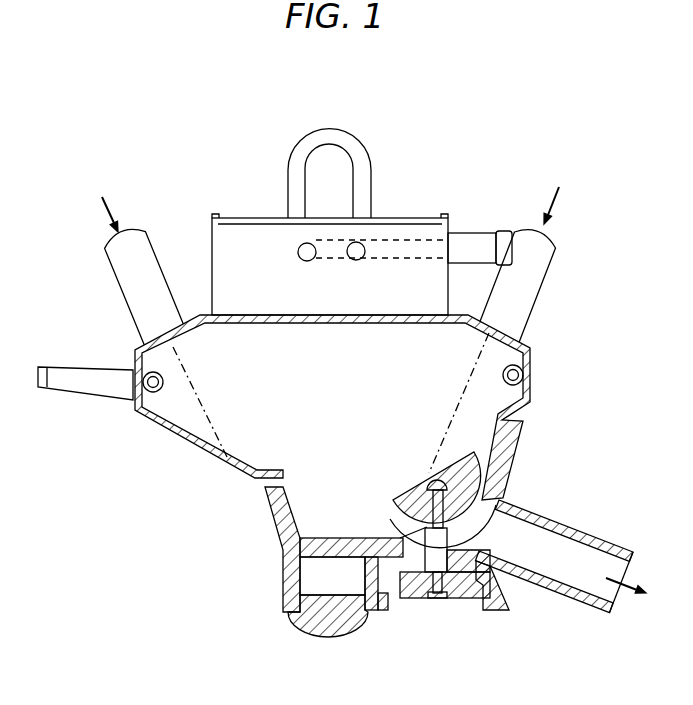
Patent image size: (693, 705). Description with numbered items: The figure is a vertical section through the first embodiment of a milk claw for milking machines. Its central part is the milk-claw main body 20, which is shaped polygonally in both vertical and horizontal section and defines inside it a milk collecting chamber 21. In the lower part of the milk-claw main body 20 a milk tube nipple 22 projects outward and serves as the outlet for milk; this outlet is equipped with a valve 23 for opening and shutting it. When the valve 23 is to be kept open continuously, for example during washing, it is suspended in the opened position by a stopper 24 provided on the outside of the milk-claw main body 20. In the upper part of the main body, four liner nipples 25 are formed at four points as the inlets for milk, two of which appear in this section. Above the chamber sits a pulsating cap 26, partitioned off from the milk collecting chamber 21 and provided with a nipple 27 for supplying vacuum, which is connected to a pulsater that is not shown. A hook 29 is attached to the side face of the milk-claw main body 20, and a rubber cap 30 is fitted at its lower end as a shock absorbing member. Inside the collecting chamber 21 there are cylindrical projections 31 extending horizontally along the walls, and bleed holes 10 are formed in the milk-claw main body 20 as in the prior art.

The bleed hole 10 is at (168, 340).
The milk-claw main body 20 is at (538, 387).
The milk collecting chamber 21 is at (303, 392).
The milk tube nipple 22 is at (559, 520).
The valve 23 is at (418, 478).
The stopper 24 is at (423, 600).
The liner nipple 25 is at (122, 275).
The pulsating cap 26 is at (399, 215).
The vacuum supply nipple 27 is at (479, 230).
The hook 29 is at (80, 388).
The rubber cap 30 is at (343, 634).
The cylindrical projection 31 is at (163, 388).